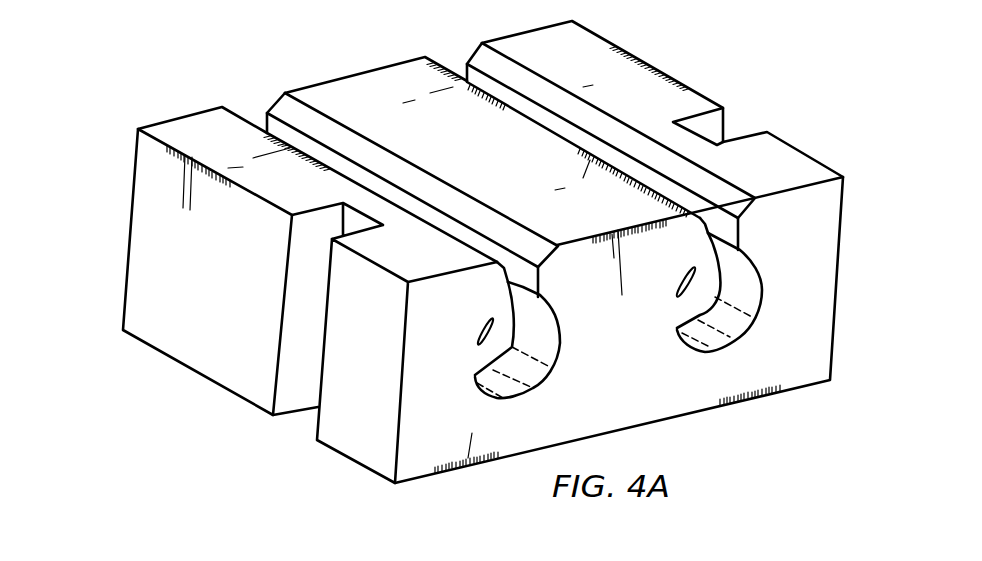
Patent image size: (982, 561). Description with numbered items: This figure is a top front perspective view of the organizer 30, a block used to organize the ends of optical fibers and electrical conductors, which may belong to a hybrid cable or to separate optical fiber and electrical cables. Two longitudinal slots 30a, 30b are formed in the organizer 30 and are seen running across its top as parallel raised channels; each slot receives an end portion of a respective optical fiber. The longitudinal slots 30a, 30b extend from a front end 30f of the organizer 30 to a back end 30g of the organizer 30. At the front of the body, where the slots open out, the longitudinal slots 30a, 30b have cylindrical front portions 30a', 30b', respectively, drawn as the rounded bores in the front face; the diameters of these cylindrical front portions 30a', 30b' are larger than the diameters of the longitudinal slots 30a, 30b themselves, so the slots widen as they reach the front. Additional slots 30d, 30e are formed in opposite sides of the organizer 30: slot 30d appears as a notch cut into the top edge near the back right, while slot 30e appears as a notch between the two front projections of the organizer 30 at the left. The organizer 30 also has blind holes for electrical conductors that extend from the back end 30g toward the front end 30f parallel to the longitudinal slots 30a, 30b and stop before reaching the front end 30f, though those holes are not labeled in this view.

The organizer 30 is at (208, 68).
The longitudinal slot 30a is at (655, 135).
The longitudinal slot 30b is at (405, 177).
The slot 30d is at (712, 120).
The slot 30e is at (353, 220).
The front end 30f is at (412, 467).
The back end 30g is at (124, 292).
The cylindrical front portion 30a' is at (744, 292).
The cylindrical front portion 30b' is at (547, 344).